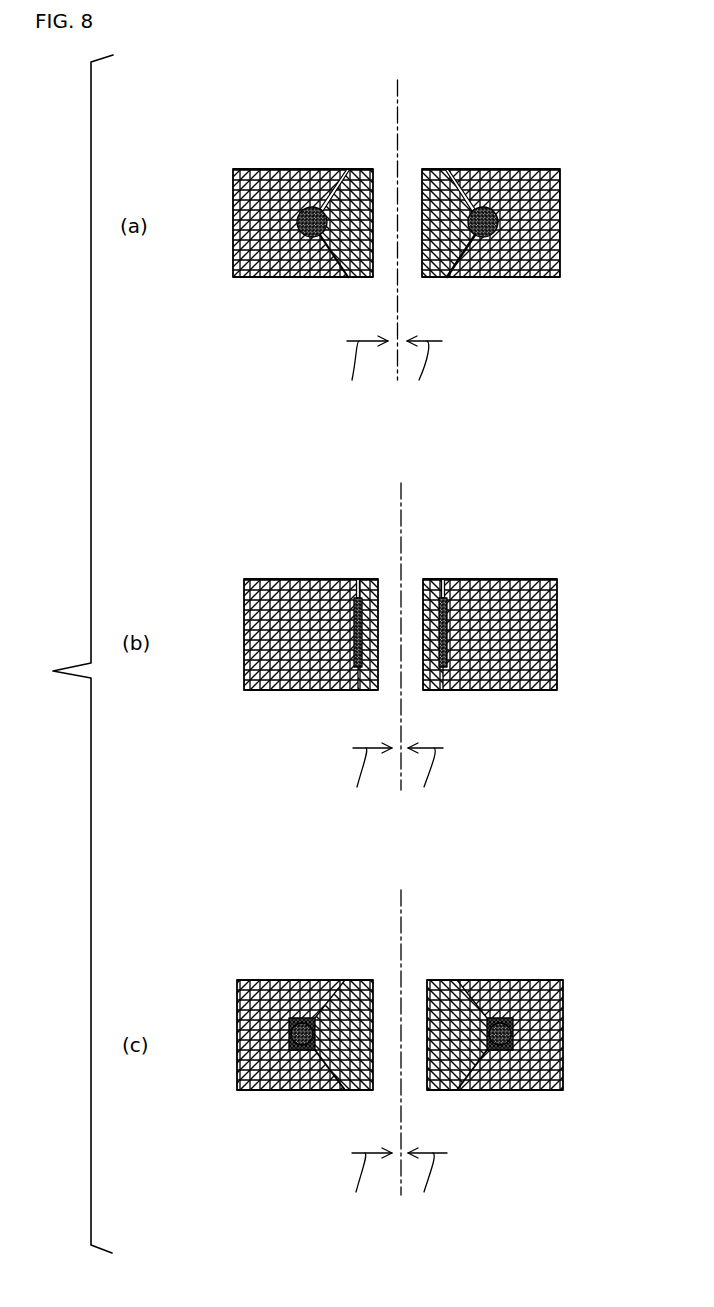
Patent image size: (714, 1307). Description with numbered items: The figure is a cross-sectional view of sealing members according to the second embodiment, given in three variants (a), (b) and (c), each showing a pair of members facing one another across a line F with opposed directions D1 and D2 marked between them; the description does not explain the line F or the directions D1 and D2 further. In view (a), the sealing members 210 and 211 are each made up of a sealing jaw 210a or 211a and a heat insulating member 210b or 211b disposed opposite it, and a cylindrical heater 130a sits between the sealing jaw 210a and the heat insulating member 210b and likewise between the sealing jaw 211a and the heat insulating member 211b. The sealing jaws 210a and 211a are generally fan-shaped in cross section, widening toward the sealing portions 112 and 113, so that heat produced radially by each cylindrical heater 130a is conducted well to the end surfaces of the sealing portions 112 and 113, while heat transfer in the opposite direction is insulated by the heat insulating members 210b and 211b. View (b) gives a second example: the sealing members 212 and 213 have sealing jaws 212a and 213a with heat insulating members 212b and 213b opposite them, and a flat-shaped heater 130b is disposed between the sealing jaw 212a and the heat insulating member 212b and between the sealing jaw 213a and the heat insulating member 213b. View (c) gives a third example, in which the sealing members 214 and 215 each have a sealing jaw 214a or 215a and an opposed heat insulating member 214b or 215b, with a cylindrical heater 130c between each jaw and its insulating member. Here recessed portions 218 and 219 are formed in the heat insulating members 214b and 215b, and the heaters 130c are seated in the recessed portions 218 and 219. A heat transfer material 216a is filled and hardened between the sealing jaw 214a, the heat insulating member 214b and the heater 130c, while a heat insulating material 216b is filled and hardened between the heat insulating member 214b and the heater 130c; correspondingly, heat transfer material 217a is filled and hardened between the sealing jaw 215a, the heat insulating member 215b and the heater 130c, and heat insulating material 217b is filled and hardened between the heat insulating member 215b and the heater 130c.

The sealing portion 112 is at (373, 250).
The sealing portion 113 is at (422, 250).
The cylindrical heater 130a is at (308, 237).
The flat-shaped heater 130b is at (354, 658).
The cylindrical heater 130c is at (299, 1050).
The sealing member 210 is at (309, 177).
The sealing jaw 210a is at (357, 169).
The heat insulating member 210b is at (267, 178).
The sealing member 211 is at (491, 177).
The sealing jaw 211a is at (456, 196).
The heat insulating member 211b is at (506, 178).
The sealing member 212 is at (319, 589).
The sealing jaw 212a is at (360, 580).
The heat insulating member 212b is at (275, 588).
The sealing member 213 is at (490, 589).
The sealing jaw 213a is at (458, 608).
The heat insulating member 213b is at (511, 590).
The sealing member 214 is at (313, 990).
The sealing jaw 214a is at (356, 988).
The heat insulating member 214b is at (272, 990).
The sealing member 215 is at (495, 990).
The sealing jaw 215a is at (462, 1009).
The heat insulating member 215b is at (509, 990).
The heat transfer material 216a is at (315, 1050).
The heat insulating material 216b is at (289, 1048).
The heat transfer material 217a is at (487, 1048).
The heat insulating material 217b is at (513, 1048).
The recessed portion 218 is at (270, 1073).
The recessed portion 219 is at (541, 1073).
The parting plane F is at (398, 103).
The first direction D1 is at (363, 778).
The second direction D2 is at (427, 778).